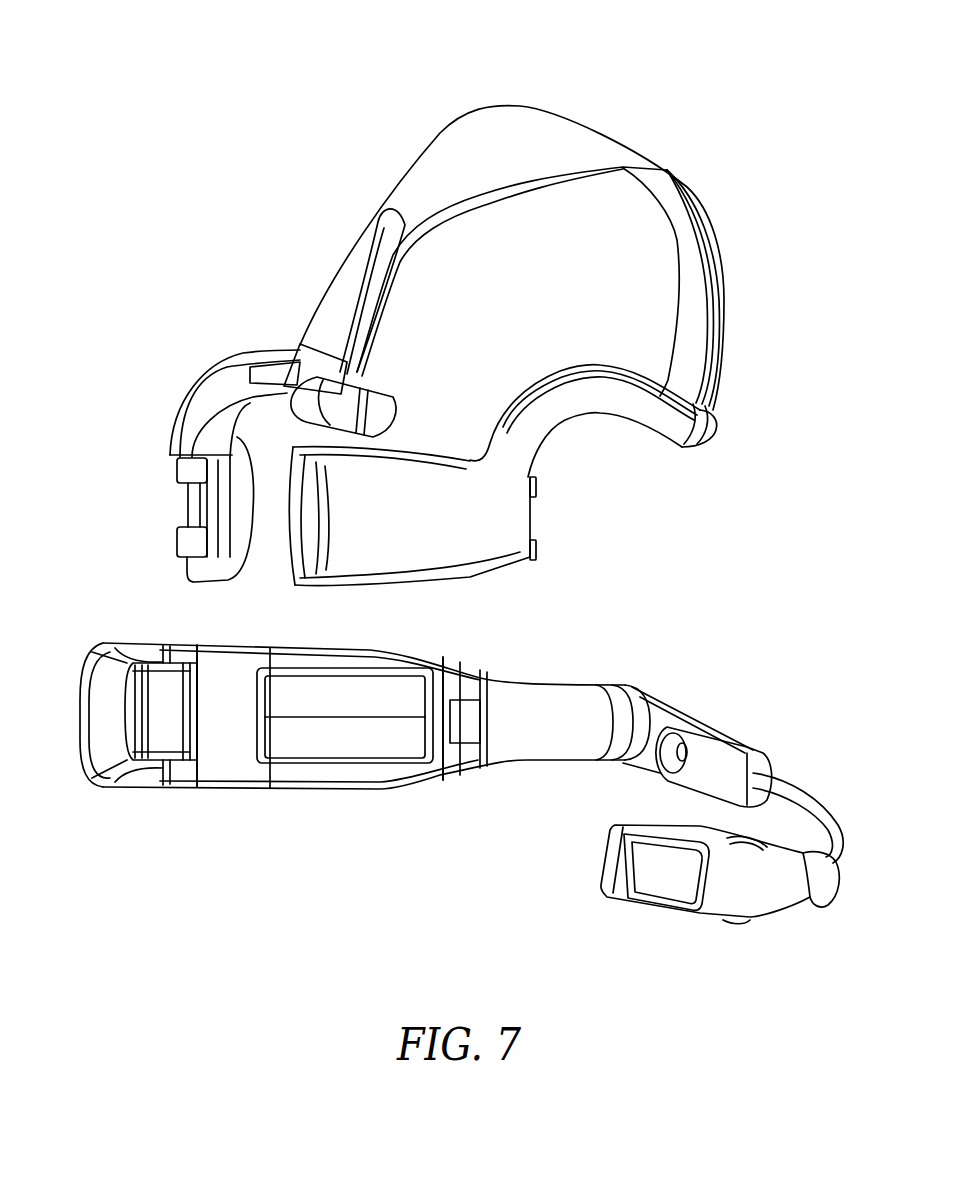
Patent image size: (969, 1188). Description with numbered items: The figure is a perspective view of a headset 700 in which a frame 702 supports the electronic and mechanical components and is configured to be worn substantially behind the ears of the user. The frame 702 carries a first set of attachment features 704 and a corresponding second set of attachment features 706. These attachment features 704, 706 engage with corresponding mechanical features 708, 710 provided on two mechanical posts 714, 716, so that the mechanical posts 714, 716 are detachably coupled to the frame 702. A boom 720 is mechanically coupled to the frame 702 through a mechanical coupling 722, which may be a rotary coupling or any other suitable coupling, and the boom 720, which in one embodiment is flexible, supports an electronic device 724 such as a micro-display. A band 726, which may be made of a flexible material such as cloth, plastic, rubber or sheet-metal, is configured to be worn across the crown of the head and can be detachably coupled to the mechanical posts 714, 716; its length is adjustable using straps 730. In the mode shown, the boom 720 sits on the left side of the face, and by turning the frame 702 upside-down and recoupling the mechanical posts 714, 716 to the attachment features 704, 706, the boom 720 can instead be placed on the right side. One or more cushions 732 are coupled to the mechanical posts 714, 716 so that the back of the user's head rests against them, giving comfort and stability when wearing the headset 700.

The headset 700 is at (307, 67).
The frame 702 is at (548, 683).
The first set of attachment features 704 is at (163, 636).
The second set of attachment features 706 is at (160, 797).
The mechanical feature 708 is at (177, 468).
The mechanical feature 710 is at (177, 543).
The mechanical post 714 is at (231, 352).
The mechanical post 716 is at (601, 366).
The boom 720 is at (810, 787).
The mechanical coupling 722 is at (657, 773).
The electronic device 724 is at (660, 918).
The band 726 is at (547, 108).
The straps 730 is at (351, 255).
The cushions 732 is at (268, 455).